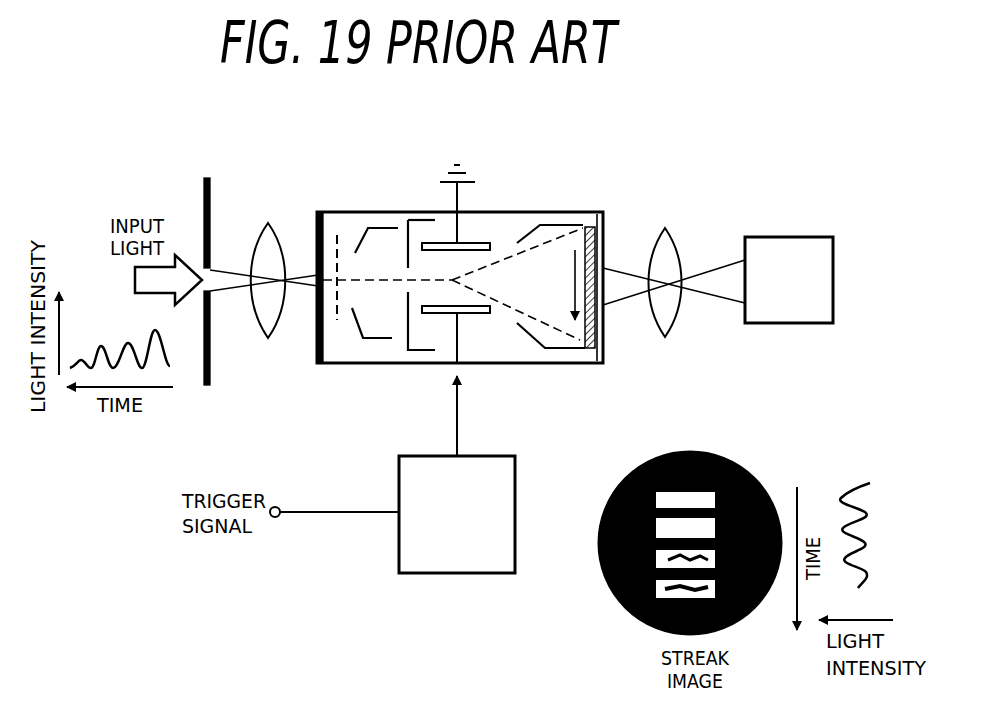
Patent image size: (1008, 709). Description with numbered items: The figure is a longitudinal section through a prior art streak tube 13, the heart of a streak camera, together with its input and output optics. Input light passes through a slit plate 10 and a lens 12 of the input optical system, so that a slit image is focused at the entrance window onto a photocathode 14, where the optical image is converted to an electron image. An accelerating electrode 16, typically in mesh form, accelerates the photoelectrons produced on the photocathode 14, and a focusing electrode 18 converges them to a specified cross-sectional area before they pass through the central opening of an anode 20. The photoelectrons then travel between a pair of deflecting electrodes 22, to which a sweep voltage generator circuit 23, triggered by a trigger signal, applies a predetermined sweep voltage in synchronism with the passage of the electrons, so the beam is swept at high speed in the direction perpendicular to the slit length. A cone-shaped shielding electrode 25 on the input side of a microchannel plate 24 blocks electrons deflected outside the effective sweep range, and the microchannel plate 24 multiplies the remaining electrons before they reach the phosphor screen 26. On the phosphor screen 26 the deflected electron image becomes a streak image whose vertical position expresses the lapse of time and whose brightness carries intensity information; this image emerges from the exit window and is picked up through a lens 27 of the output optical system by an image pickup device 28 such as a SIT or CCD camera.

The slit plate 10 is at (212, 177).
The lens 12 is at (270, 222).
The streak tube 13 is at (480, 198).
The photocathode 14 is at (326, 228).
The accelerating electrode 16 is at (340, 236).
The focusing electrode 18 is at (358, 233).
The anode 20 is at (422, 221).
The deflecting electrodes 22 is at (482, 234).
The sweep voltage generator circuit 23 is at (486, 455).
The microchannel plate 24 is at (592, 229).
The cone-shaped shielding electrode 25 is at (523, 232).
The phosphor screen 26 is at (607, 232).
The lens 27 is at (668, 236).
The image pickup device 28 is at (820, 237).